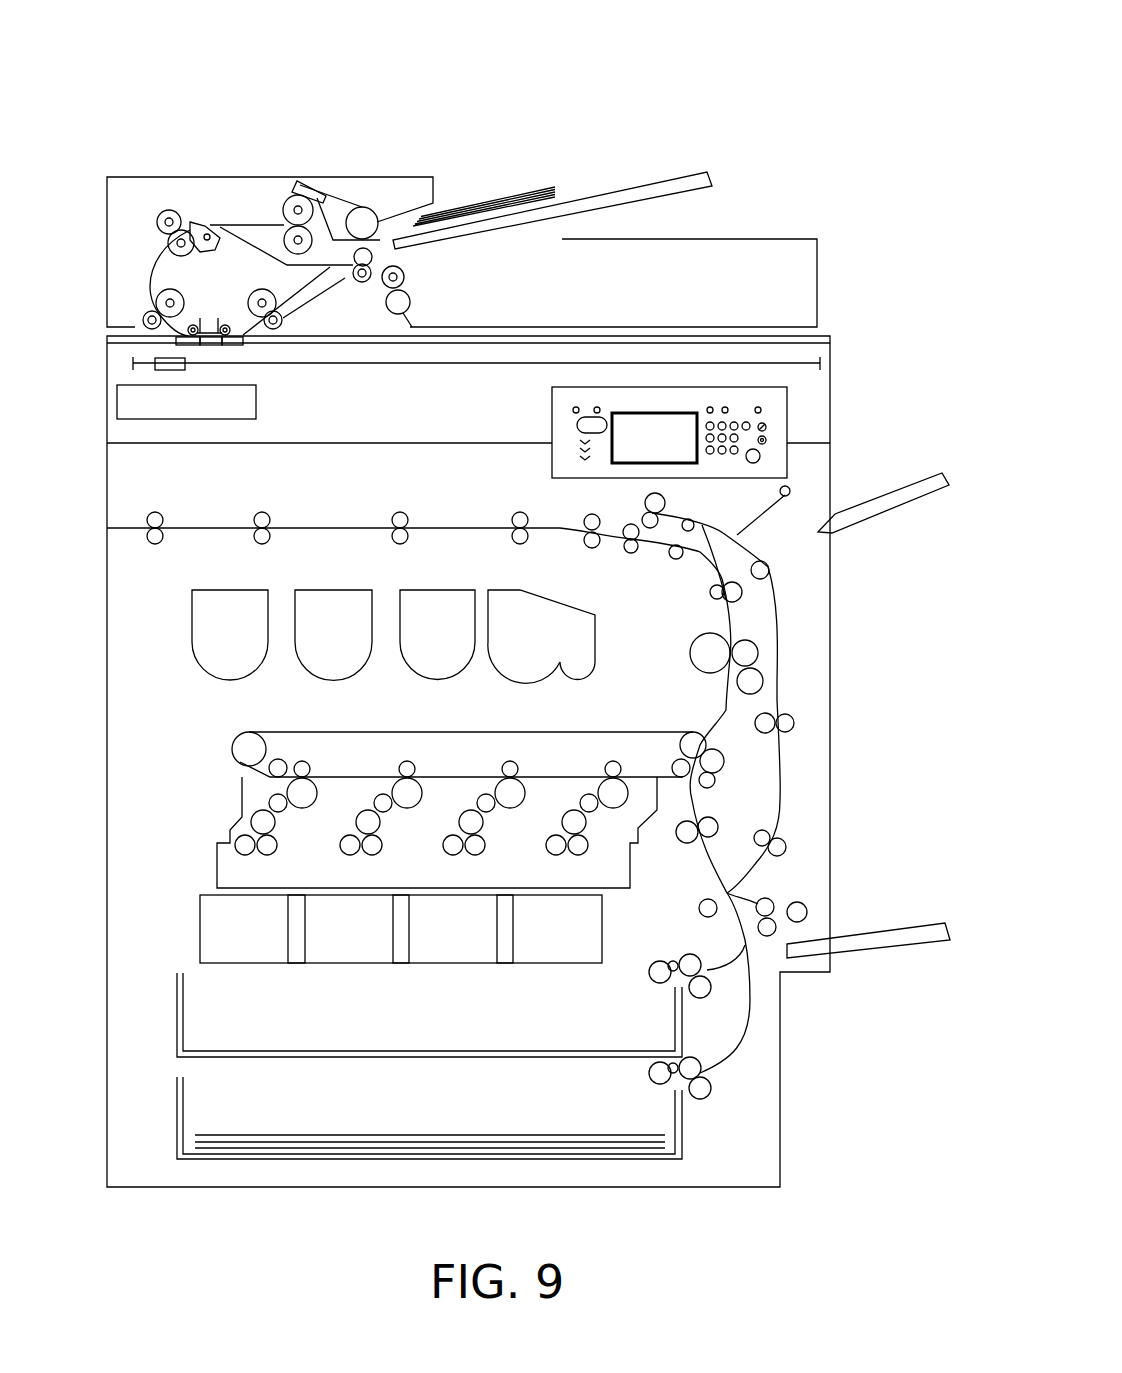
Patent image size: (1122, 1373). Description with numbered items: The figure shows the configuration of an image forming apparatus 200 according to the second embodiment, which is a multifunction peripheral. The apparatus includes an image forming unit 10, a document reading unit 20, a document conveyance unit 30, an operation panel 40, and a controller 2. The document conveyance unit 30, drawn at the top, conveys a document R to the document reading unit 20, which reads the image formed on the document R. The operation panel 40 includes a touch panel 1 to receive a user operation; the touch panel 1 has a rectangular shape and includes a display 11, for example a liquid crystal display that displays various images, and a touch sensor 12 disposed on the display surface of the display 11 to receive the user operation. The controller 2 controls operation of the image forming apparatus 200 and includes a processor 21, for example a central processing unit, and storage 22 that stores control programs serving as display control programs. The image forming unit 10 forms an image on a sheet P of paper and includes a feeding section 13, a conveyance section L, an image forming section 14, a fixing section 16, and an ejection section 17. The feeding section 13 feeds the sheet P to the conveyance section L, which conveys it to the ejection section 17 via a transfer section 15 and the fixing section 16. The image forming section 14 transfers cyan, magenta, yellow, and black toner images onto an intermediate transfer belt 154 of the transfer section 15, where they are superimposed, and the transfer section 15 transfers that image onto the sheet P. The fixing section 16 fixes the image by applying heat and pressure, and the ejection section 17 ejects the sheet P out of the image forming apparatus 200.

The image forming apparatus 200 is at (722, 95).
The document R is at (542, 190).
The document conveyance unit 30 is at (836, 293).
The document reading unit 20 is at (836, 378).
The image forming unit 10 is at (872, 602).
The touch panel 1 is at (628, 372).
The display 11 is at (628, 372).
The touch sensor 12 is at (641, 413).
The controller 2 is at (276, 407).
The processor 21 is at (276, 407).
The storage 22 is at (256, 402).
The operation panel 40 is at (795, 413).
The ejection section 17 is at (137, 510).
The conveyance section L is at (320, 520).
The fixing section 16 is at (697, 627).
The transfer section 15 is at (213, 742).
The intermediate transfer belt 154 is at (399, 731).
The image forming section 14 is at (150, 857).
The feeding section 13 is at (165, 1103).
The sheet P is at (297, 1150).